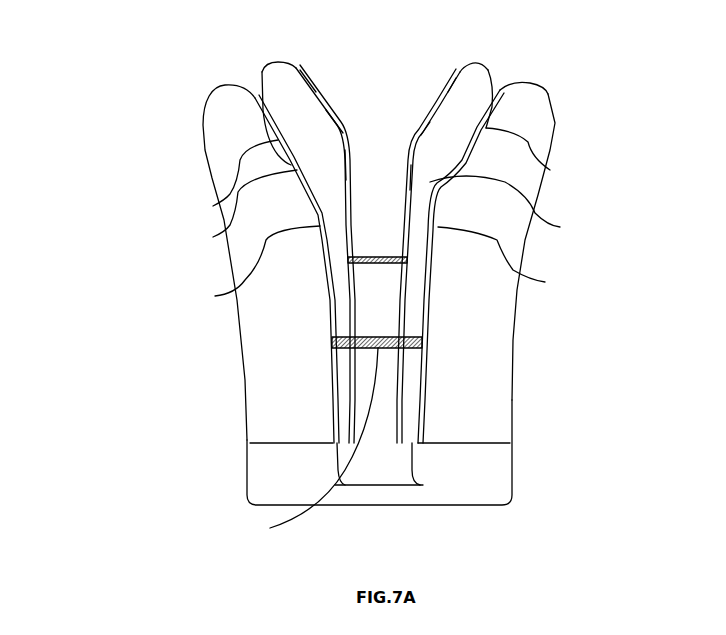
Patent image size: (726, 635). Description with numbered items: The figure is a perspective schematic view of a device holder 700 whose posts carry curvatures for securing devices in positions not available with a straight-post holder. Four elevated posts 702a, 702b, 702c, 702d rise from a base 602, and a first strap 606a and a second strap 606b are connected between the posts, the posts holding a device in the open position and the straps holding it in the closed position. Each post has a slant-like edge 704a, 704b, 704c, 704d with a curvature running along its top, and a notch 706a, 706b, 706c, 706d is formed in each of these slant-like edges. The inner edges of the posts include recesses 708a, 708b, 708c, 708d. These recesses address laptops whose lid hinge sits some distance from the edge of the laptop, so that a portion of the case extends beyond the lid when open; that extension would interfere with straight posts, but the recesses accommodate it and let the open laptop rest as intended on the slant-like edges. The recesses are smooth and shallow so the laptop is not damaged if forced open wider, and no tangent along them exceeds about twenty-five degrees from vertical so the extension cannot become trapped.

The device holder 700 is at (98, 64).
The base 602 is at (245, 493).
The first strap 606a is at (300, 441).
The second strap 606b is at (402, 337).
The post 702a is at (210, 175).
The post 702b is at (513, 391).
The post 702c is at (262, 83).
The post 702d is at (497, 83).
The slant-like edge 704a is at (213, 206).
The slant-like edge 704b is at (550, 170).
The slant-like edge 704c is at (308, 92).
The slant-like edge 704d is at (447, 85).
The notch 706a is at (213, 237).
The notch 706b is at (560, 227).
The notch 706c is at (335, 118).
The notch 706d is at (422, 131).
The recess 708a is at (215, 296).
The recess 708b is at (545, 282).
The recess 708c is at (343, 166).
The recess 708d is at (412, 177).